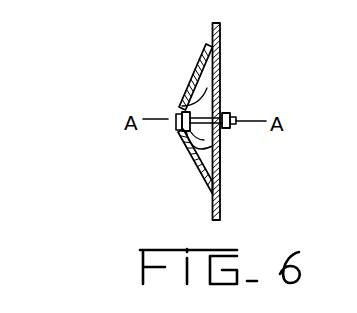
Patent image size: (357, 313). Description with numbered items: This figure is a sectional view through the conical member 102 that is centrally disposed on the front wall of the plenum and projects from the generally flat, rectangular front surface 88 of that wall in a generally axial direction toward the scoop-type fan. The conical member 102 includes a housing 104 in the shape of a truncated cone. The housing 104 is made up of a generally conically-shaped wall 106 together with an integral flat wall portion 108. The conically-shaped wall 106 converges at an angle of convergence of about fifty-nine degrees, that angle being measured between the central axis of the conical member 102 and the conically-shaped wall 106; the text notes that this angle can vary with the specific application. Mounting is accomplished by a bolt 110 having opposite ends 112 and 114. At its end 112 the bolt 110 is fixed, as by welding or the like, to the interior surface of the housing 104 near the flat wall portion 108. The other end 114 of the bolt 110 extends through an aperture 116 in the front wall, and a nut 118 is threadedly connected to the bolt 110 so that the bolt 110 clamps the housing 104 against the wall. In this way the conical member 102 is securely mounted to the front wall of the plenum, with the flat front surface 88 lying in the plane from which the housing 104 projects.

The flat front surface 88 is at (212, 32).
The conical member 102 is at (156, 141).
The housing 104 is at (203, 160).
The conically-shaped wall 106 is at (205, 72).
The flat wall portion 108 is at (178, 114).
The bolt 110 is at (222, 152).
The end 112 is at (188, 143).
The end 114 is at (232, 120).
The aperture 116 is at (222, 143).
The nut 118 is at (232, 117).